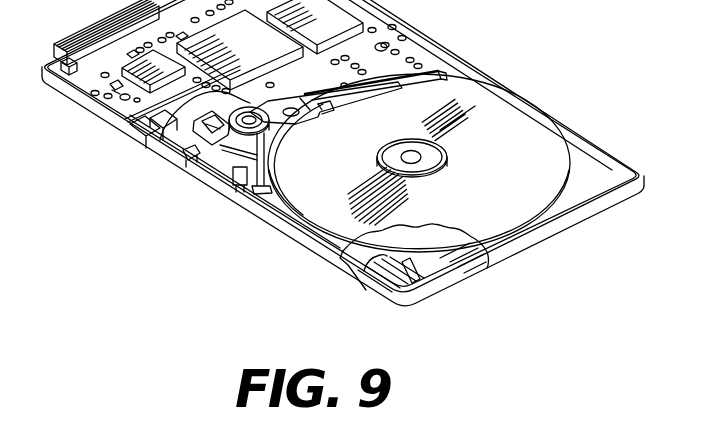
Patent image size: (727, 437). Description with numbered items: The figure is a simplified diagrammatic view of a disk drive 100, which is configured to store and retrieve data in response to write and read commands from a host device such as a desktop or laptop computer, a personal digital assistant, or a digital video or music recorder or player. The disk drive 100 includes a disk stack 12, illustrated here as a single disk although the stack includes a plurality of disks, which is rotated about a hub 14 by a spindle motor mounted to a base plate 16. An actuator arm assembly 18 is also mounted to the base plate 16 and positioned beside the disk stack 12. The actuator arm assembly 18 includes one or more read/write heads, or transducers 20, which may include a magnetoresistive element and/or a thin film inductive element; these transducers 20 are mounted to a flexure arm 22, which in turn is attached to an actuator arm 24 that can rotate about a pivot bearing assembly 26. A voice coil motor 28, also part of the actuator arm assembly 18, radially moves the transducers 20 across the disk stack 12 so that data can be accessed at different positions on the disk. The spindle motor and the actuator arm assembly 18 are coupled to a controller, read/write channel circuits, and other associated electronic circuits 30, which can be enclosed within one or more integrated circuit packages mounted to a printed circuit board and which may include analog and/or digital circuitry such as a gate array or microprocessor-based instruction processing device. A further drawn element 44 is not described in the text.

The disk drive 100 is at (343, 153).
The disk stack 12 is at (544, 129).
The hub 14 is at (438, 161).
The base plate 16 is at (588, 160).
The actuator arm assembly 18 is at (368, 109).
The read/write heads 20 is at (402, 83).
The flexure arm 22 is at (330, 108).
The actuator arm 24 is at (283, 125).
The pivot bearing assembly 26 is at (280, 135).
The voice coil motor 28 is at (200, 145).
The electronic circuits 30 is at (169, 75).
The flex circuit 44 is at (352, 278).